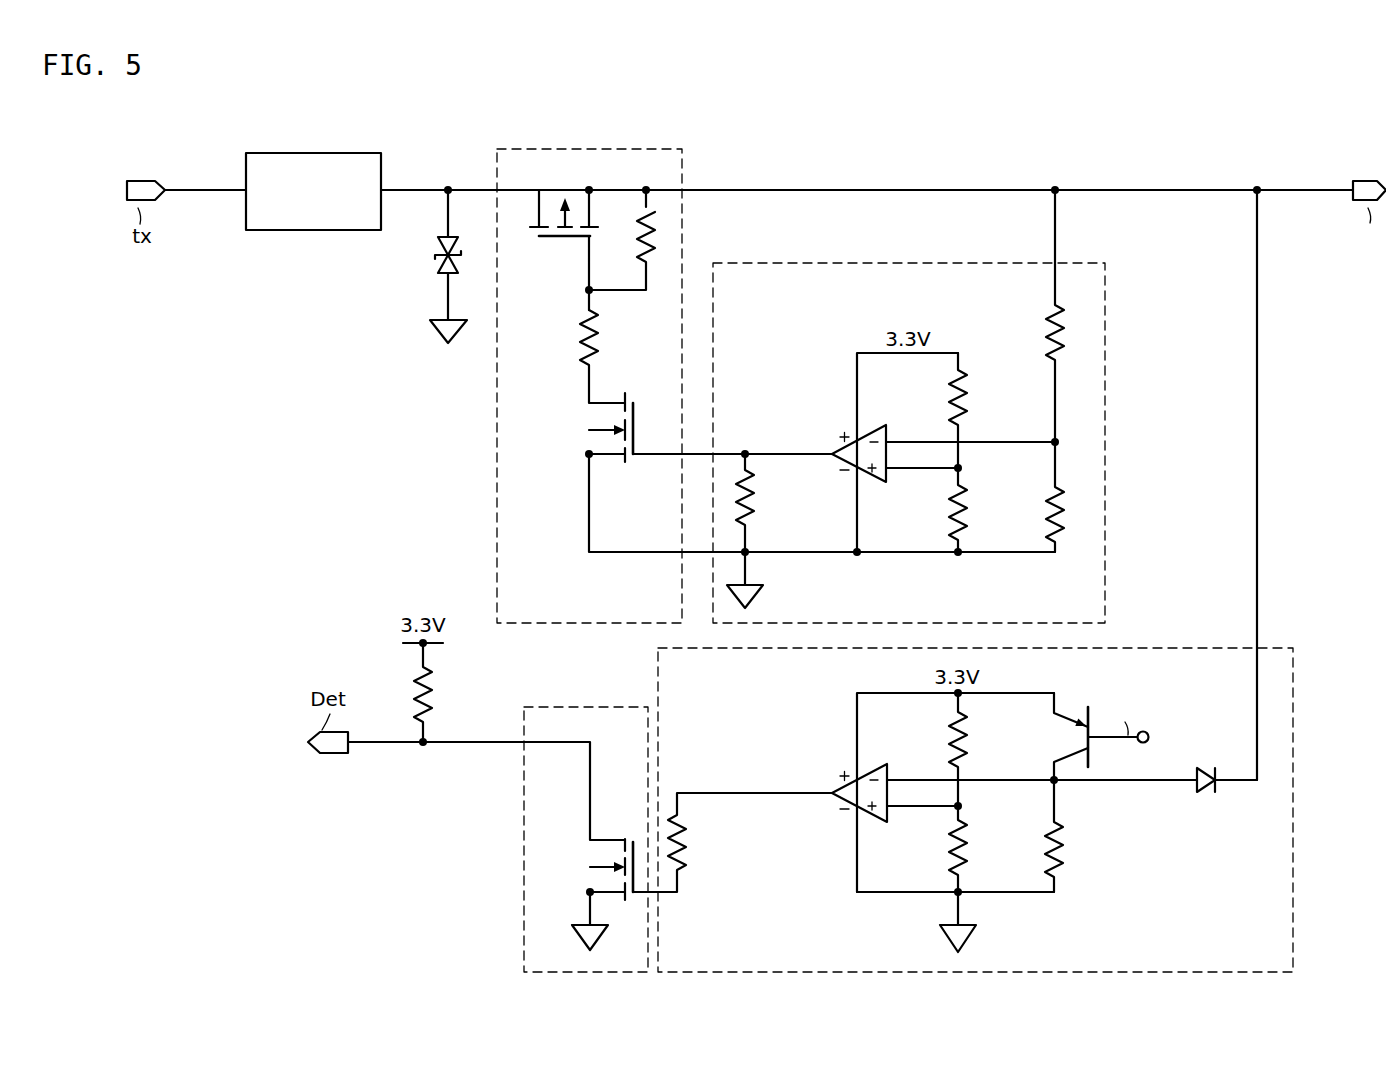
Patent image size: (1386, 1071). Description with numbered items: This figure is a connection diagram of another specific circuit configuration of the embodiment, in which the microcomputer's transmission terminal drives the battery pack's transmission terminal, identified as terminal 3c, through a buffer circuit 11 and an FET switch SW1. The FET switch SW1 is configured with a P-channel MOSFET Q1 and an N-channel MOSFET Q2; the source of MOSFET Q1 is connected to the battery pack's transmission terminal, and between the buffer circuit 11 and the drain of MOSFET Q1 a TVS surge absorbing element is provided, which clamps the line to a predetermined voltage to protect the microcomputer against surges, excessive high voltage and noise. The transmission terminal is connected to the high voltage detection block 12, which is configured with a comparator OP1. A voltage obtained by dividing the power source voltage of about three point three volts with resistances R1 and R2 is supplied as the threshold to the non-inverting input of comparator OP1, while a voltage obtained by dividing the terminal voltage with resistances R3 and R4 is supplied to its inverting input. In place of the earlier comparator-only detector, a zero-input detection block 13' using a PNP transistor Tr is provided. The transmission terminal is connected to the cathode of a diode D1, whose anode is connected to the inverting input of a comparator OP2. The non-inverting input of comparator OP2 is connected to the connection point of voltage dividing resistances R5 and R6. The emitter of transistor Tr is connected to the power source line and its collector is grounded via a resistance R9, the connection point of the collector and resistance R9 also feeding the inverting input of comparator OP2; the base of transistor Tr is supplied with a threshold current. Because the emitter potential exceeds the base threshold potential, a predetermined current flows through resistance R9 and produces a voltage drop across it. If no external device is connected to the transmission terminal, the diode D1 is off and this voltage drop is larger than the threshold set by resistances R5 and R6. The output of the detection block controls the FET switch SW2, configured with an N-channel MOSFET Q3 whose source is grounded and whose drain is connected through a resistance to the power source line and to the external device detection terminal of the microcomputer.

The buffer circuit 11 is at (313, 150).
The high voltage detection block 12 is at (902, 262).
The zero-input detection block 13' is at (975, 787).
The terminal 3c is at (1370, 180).
The FET switch SW1 is at (586, 148).
The FET switch SW2 is at (583, 705).
The P-channel MOSFET Q1 is at (549, 240).
The N-channel MOSFET Q2 is at (625, 462).
The N-channel MOSFET Q3 is at (623, 835).
The resistance R1 is at (963, 396).
The resistance R2 is at (970, 513).
The resistance R3 is at (1040, 358).
The resistance R4 is at (1033, 500).
The voltage dividing resistance R5 is at (963, 750).
The voltage dividing resistance R6 is at (970, 846).
The resistance R9 is at (1045, 838).
The comparator OP1 is at (877, 482).
The comparator OP2 is at (877, 822).
The surge absorbing element TVS is at (437, 268).
The PNP transistor Tr is at (1066, 712).
The diode D1 is at (1198, 768).